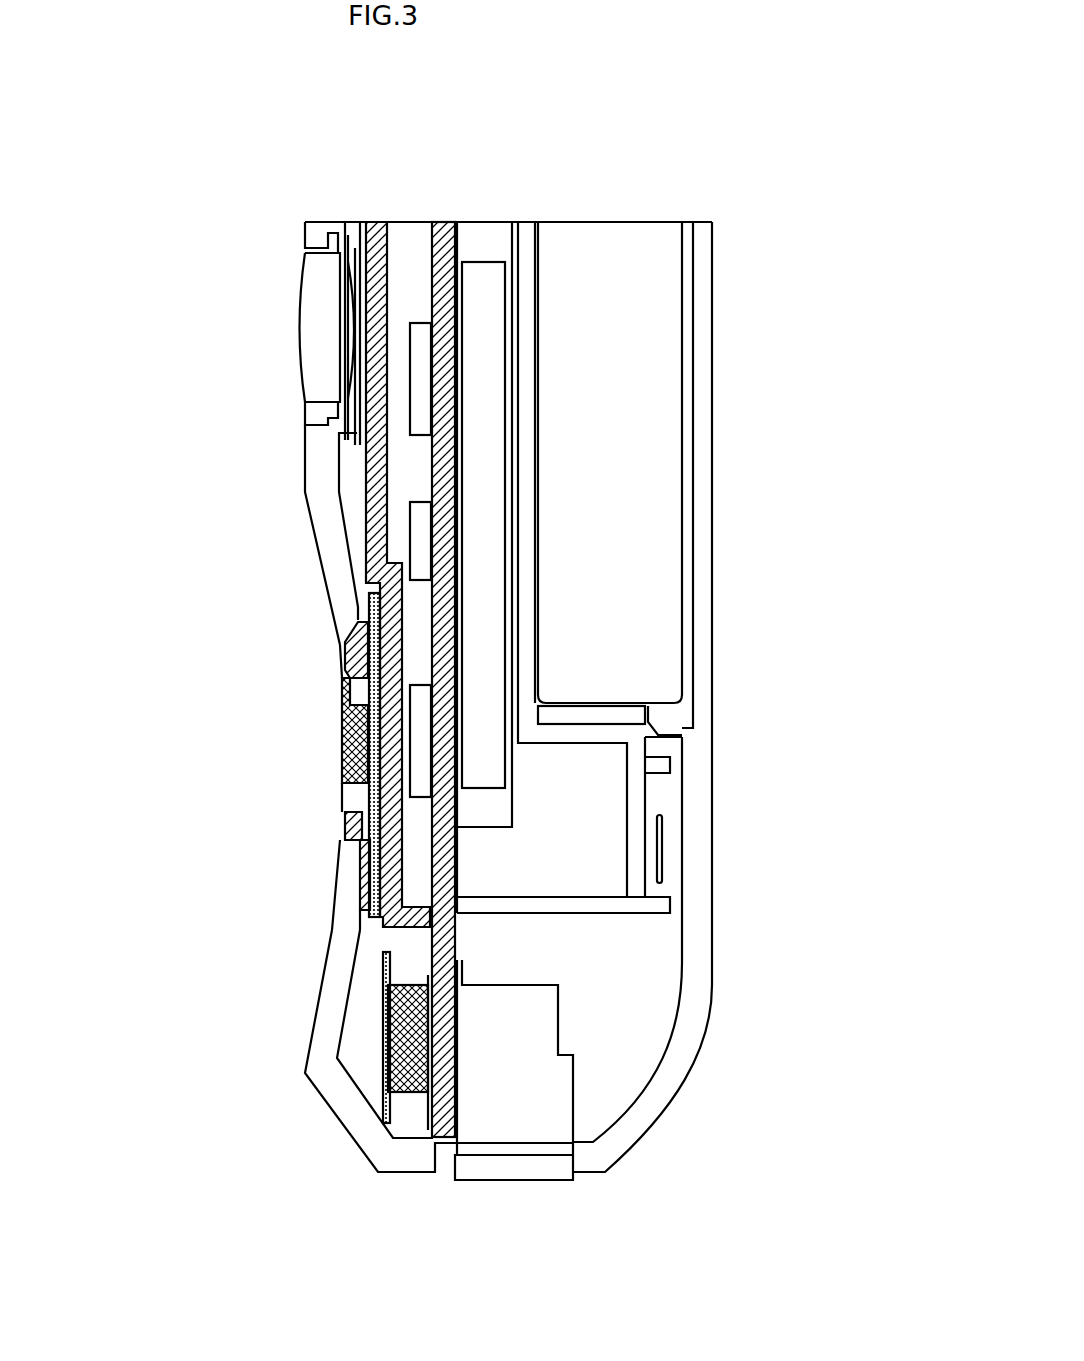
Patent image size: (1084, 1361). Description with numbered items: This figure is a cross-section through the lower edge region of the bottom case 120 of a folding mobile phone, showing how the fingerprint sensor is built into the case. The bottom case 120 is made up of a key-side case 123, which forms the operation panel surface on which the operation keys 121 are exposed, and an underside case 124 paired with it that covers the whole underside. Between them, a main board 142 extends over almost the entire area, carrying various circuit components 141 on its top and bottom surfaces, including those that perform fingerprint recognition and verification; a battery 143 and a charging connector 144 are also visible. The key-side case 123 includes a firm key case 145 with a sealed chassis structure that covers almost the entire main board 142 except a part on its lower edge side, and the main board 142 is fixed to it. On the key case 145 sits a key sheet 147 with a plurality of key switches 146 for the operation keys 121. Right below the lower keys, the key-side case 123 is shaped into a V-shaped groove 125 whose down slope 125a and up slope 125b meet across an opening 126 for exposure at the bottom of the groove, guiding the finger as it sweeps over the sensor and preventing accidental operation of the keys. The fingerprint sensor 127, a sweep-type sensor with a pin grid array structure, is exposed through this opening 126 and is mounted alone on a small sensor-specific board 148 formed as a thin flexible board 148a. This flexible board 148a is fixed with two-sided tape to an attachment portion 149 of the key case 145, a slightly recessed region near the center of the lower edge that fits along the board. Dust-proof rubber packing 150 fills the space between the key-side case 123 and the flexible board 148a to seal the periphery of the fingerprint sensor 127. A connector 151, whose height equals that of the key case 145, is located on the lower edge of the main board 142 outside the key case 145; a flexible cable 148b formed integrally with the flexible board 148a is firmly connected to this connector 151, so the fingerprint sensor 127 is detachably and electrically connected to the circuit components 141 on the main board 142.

The bottom case 120 is at (717, 800).
The operation keys 121 is at (318, 347).
The key-side case 123 is at (320, 1054).
The underside case 124 is at (715, 906).
The V-shaped groove 125 is at (333, 598).
The down slope 125a is at (322, 542).
The up slope 125b is at (326, 1004).
The opening for exposure 126 is at (352, 655).
The fingerprint sensor 127 is at (340, 737).
The circuit components 141 is at (420, 345).
The main board 142 is at (443, 240).
The battery 143 is at (655, 462).
The charging connector 144 is at (510, 1157).
The key case 145 is at (372, 240).
The key switches 146 is at (355, 313).
The key sheet 147 is at (352, 460).
The sensor-specific board 148 is at (368, 860).
The flexible board 148a is at (365, 890).
The flexible cable 148b is at (382, 1107).
The attachment portion 149 is at (382, 816).
The dust-proof rubber packing 150 is at (348, 817).
The connector 151 is at (388, 1012).